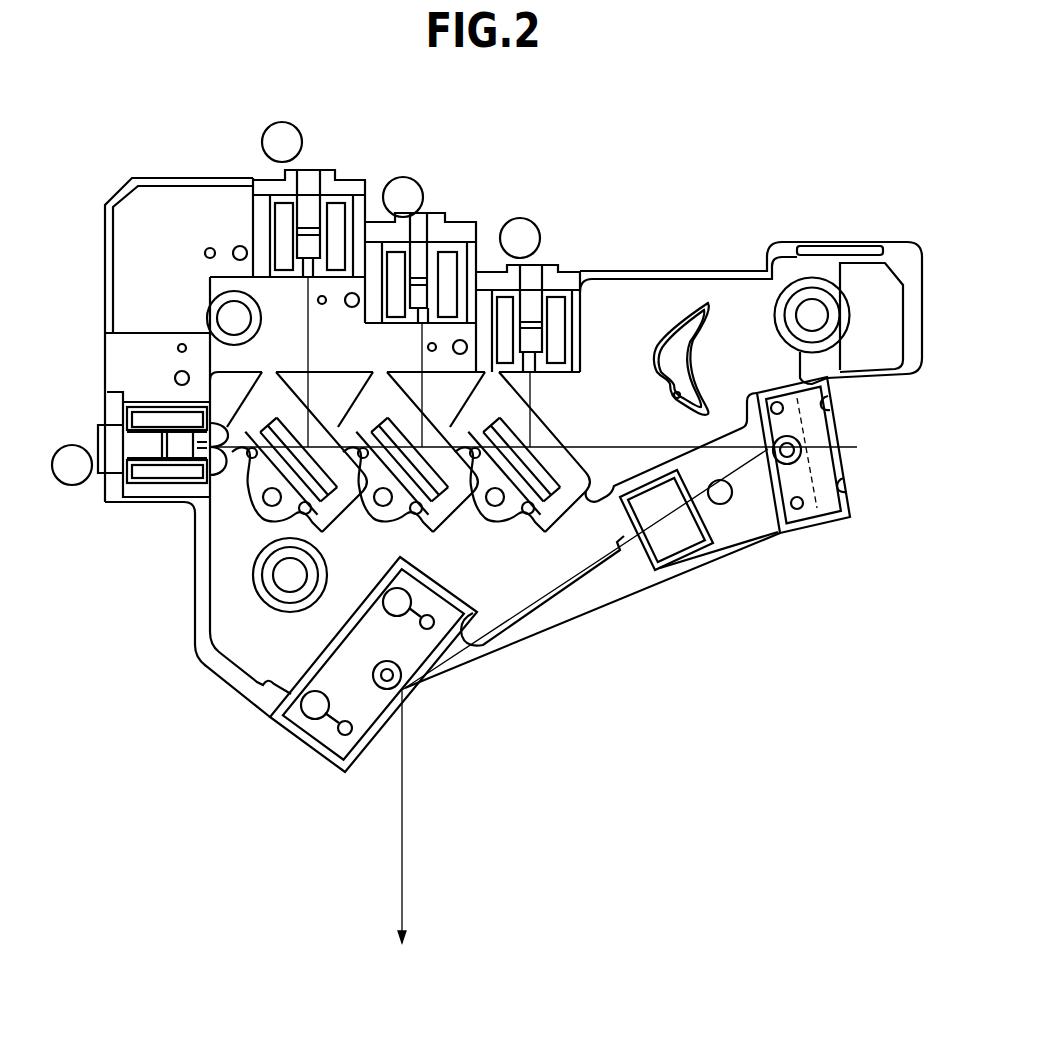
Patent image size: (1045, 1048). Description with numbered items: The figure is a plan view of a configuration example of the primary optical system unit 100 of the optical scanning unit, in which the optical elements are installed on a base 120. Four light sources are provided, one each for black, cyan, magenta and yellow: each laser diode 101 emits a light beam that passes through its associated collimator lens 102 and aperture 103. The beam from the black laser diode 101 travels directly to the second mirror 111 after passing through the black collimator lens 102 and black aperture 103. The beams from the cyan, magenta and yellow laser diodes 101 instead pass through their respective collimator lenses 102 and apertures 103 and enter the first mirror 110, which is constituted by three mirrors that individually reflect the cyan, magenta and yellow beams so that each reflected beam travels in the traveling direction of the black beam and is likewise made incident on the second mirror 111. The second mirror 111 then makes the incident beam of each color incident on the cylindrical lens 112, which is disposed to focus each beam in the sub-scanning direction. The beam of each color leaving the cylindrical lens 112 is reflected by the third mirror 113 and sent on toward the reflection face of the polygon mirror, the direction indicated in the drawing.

The light source unit 100 is at (770, 200).
The semiconductor laser 101 is at (311, 195).
The laser holder 102 is at (277, 218).
The lead terminal 103 is at (306, 280).
The coupling lens unit 110 is at (360, 520).
The aperture member 111 is at (812, 452).
The beam combining prism 112 is at (681, 548).
The reflecting mirror 113 is at (318, 740).
The housing 120 is at (210, 678).